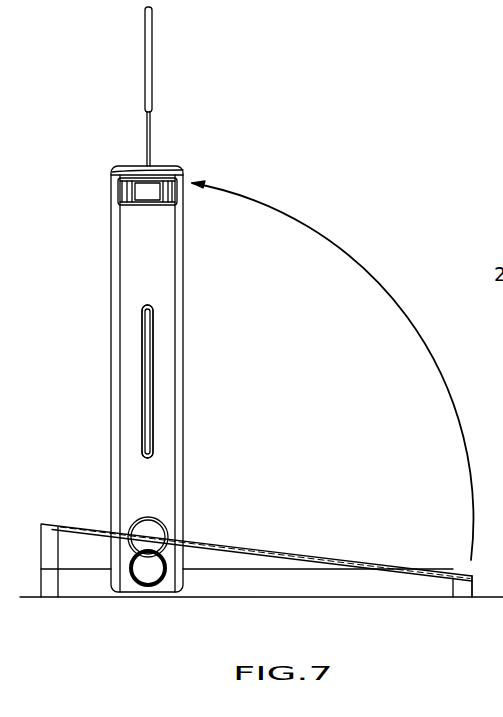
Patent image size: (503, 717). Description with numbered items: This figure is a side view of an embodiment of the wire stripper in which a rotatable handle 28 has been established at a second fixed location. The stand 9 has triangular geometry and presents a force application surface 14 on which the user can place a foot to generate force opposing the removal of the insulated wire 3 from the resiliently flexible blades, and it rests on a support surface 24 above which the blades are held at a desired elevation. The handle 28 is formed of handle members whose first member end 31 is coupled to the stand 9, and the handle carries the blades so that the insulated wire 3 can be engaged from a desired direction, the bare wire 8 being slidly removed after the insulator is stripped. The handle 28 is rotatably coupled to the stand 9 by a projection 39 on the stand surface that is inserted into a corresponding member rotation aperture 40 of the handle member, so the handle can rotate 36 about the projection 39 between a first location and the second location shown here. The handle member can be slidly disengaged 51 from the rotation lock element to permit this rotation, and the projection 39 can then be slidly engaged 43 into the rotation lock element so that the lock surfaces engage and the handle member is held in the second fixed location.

The insulated wire 3 is at (153, 57).
The wire 8 is at (151, 133).
The handle 28 is at (184, 170).
The slidly disengaged 51 is at (207, 422).
The slidly engaged 43 is at (207, 432).
The rotate 36 is at (332, 370).
The member rotation aperture 40 is at (148, 537).
The projection 39 is at (148, 568).
The first member end 31 is at (184, 517).
The force application surface 14 is at (305, 553).
The support surface 24 is at (23, 592).
The stand 9 is at (473, 590).